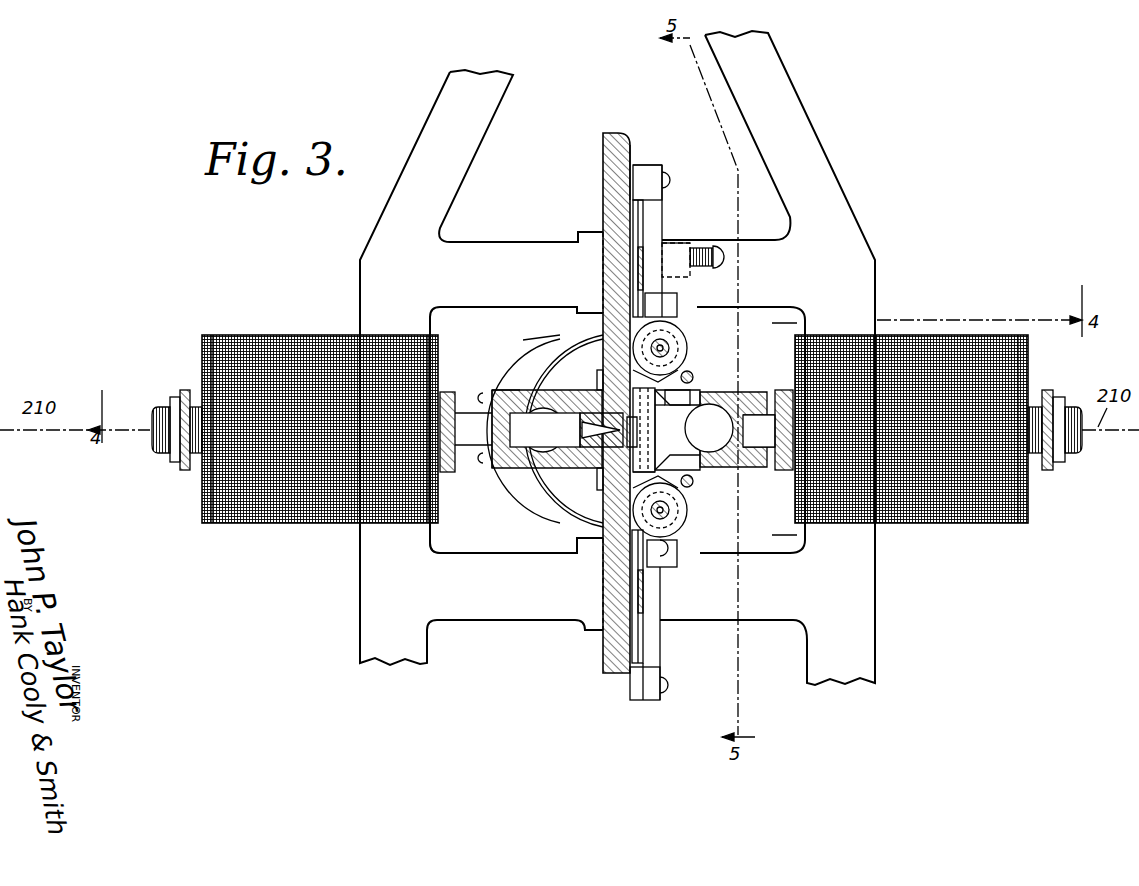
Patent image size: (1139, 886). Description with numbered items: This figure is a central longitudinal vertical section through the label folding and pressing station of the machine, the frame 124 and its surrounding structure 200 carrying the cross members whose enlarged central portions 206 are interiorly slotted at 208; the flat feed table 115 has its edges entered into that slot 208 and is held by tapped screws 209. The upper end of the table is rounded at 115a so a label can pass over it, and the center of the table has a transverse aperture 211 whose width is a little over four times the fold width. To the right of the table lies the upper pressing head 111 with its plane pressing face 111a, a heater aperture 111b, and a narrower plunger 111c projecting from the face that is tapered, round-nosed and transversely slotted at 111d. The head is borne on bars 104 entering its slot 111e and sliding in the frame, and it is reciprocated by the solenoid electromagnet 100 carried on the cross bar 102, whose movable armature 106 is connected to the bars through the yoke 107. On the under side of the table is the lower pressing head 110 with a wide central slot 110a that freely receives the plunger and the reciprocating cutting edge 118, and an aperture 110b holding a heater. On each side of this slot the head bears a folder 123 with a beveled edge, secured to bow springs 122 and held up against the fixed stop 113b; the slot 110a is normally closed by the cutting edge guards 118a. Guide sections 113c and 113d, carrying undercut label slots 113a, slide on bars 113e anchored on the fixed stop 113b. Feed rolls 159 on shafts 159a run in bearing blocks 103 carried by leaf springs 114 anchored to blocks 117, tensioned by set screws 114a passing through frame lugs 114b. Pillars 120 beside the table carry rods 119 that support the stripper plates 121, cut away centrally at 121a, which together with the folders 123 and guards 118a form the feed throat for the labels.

The frame 200 is at (435, 112).
The feed table 115 is at (603, 150).
The rounded upper end of table 115a is at (628, 140).
The anchor block 117 is at (633, 175).
The undercut slot 113a is at (638, 222).
The fixed center stop 113b is at (590, 315).
The upper adjustable guide section 113c is at (638, 210).
The lower adjustable guide section 113d is at (640, 690).
The guide bar 113e is at (640, 235).
The leaf spring 114 is at (662, 205).
The set screw 114a is at (690, 262).
The lug 114b is at (690, 255).
The screws 209 is at (603, 252).
The slot 208 is at (603, 265).
The enlarged central portion 206 is at (575, 622).
The transverse aperture 211 is at (523, 340).
The bow springs 122 is at (505, 345).
The folder 123 is at (470, 345).
The cutting edge 118 is at (440, 330).
The cutting edge guard 118a is at (520, 535).
The stripper plates 121 is at (565, 520).
The central cut-away of stripper plates 121a is at (878, 315).
The pillar 120 is at (564, 431).
The lower pressing head 110 is at (470, 525).
The slot of lower pressing head 110a is at (500, 520).
The heater aperture 110b is at (470, 380).
The frame 124 is at (378, 635).
The electromagnet 100 is at (911, 429).
The cross bar 102 is at (740, 448).
The bars 104 is at (745, 420).
The movable armature 106 is at (1075, 447).
The yoke 107 is at (1048, 468).
The upper pressing head 111 is at (655, 470).
The plane pressing face 111a is at (640, 480).
The heater aperture 111b is at (655, 410).
The plunger 111c is at (665, 395).
The transverse slot of plunger 111d is at (678, 400).
The slot in pressing head 111e is at (660, 455).
The feed roll 159 is at (680, 335).
The feed roll shaft 159a is at (670, 340).
The rod 119 is at (700, 350).
The bearing block 103 is at (690, 300).